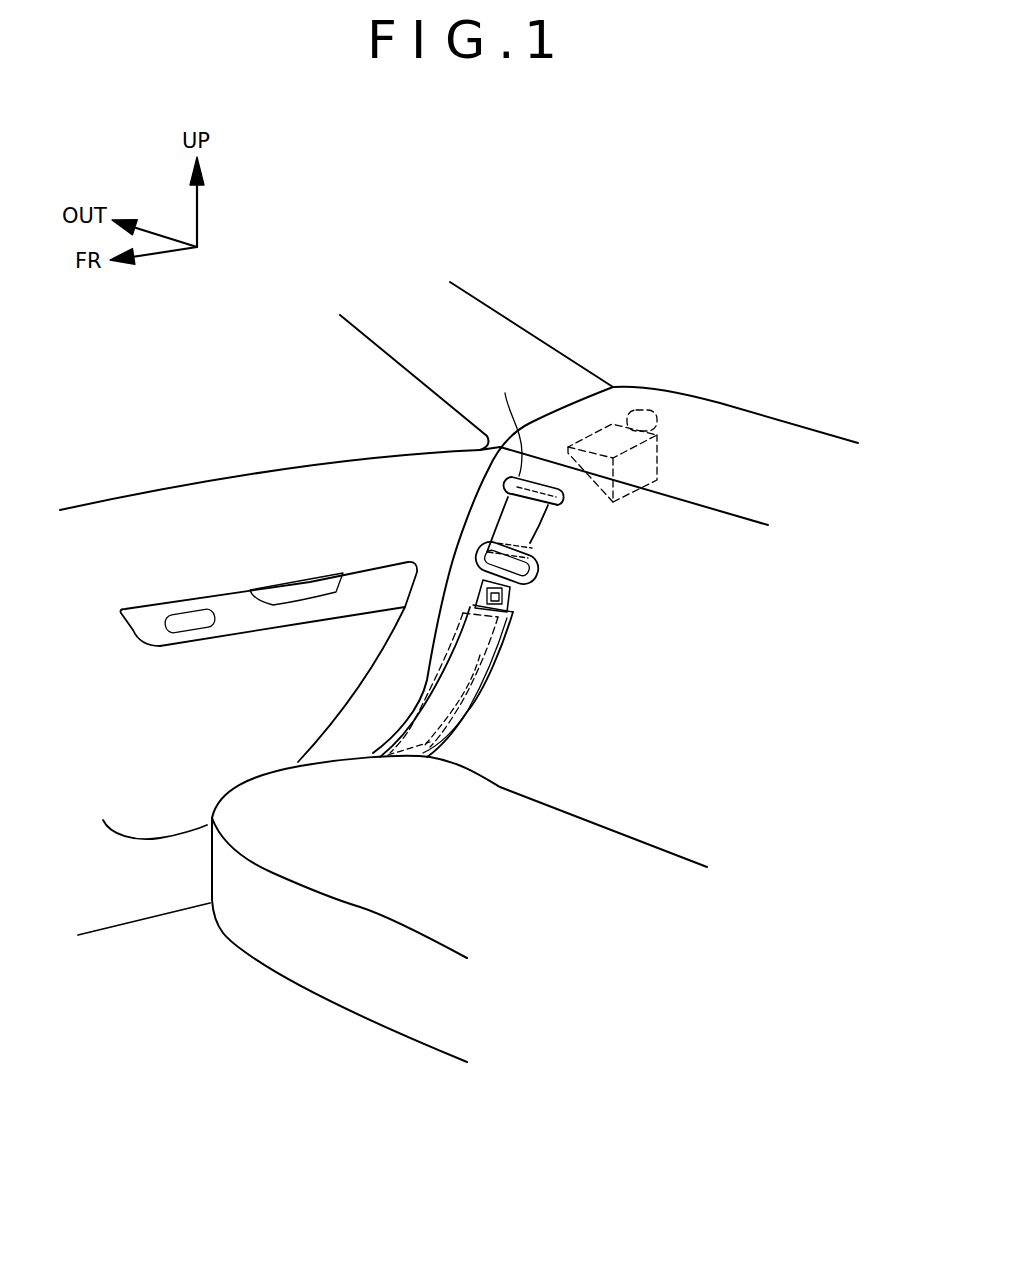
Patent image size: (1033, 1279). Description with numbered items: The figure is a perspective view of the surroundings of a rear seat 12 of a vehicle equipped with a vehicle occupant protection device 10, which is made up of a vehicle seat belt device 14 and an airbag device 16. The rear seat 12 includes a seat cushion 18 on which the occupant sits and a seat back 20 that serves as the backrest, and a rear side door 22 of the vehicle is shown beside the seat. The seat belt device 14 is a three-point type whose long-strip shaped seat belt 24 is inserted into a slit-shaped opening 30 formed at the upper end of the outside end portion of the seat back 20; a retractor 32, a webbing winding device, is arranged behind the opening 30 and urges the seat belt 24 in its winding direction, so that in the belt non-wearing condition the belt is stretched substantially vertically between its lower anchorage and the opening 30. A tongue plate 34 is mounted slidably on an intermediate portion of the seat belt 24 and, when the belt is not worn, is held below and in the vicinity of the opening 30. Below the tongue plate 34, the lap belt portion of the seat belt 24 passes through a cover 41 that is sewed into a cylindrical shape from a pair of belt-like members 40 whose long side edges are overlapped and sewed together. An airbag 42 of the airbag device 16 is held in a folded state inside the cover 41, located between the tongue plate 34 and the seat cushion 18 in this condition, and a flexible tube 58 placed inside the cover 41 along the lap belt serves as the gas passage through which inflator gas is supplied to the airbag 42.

The vehicle occupant protection device 10 is at (635, 290).
The rear seat 12 is at (323, 1045).
The vehicle seat belt device 14 is at (438, 541).
The airbag device 16 is at (511, 667).
The seat cushion 18 is at (290, 947).
The seat back 20 is at (669, 456).
The rear side door 22 is at (133, 892).
The seat belt 24 is at (535, 533).
The opening 30 is at (523, 386).
The retractor 32 is at (655, 458).
The tongue plate 34 is at (540, 575).
The belt-like members 40 is at (510, 632).
The cover 41 is at (443, 665).
The airbag 42 is at (470, 697).
The flexible tube 58 is at (425, 752).